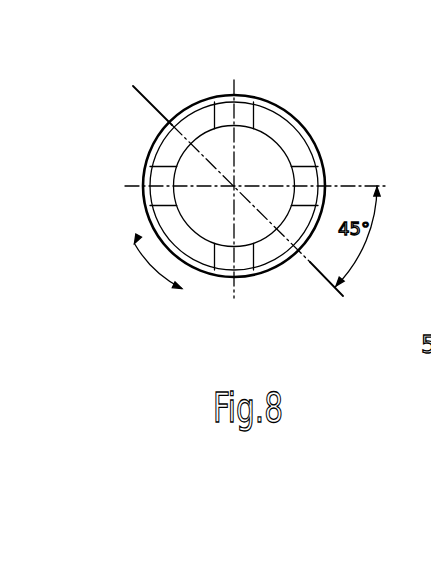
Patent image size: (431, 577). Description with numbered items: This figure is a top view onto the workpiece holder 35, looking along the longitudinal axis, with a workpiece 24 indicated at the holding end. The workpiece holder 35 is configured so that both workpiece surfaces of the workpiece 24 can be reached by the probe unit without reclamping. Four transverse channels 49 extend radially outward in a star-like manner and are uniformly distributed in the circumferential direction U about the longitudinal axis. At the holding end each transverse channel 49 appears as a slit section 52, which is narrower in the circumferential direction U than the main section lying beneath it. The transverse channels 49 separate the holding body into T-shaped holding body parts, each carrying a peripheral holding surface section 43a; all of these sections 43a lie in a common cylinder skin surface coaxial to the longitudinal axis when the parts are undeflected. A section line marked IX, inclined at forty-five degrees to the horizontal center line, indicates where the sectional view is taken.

The workpiece holder 35 is at (306, 104).
The workpiece 24 is at (270, 162).
The peripheral holding surface section 43a is at (193, 223).
The slit section 52 is at (224, 117).
The transverse channel 49 is at (246, 97).
The circumferential direction U is at (150, 268).
The section line IX- IX is at (143, 95).